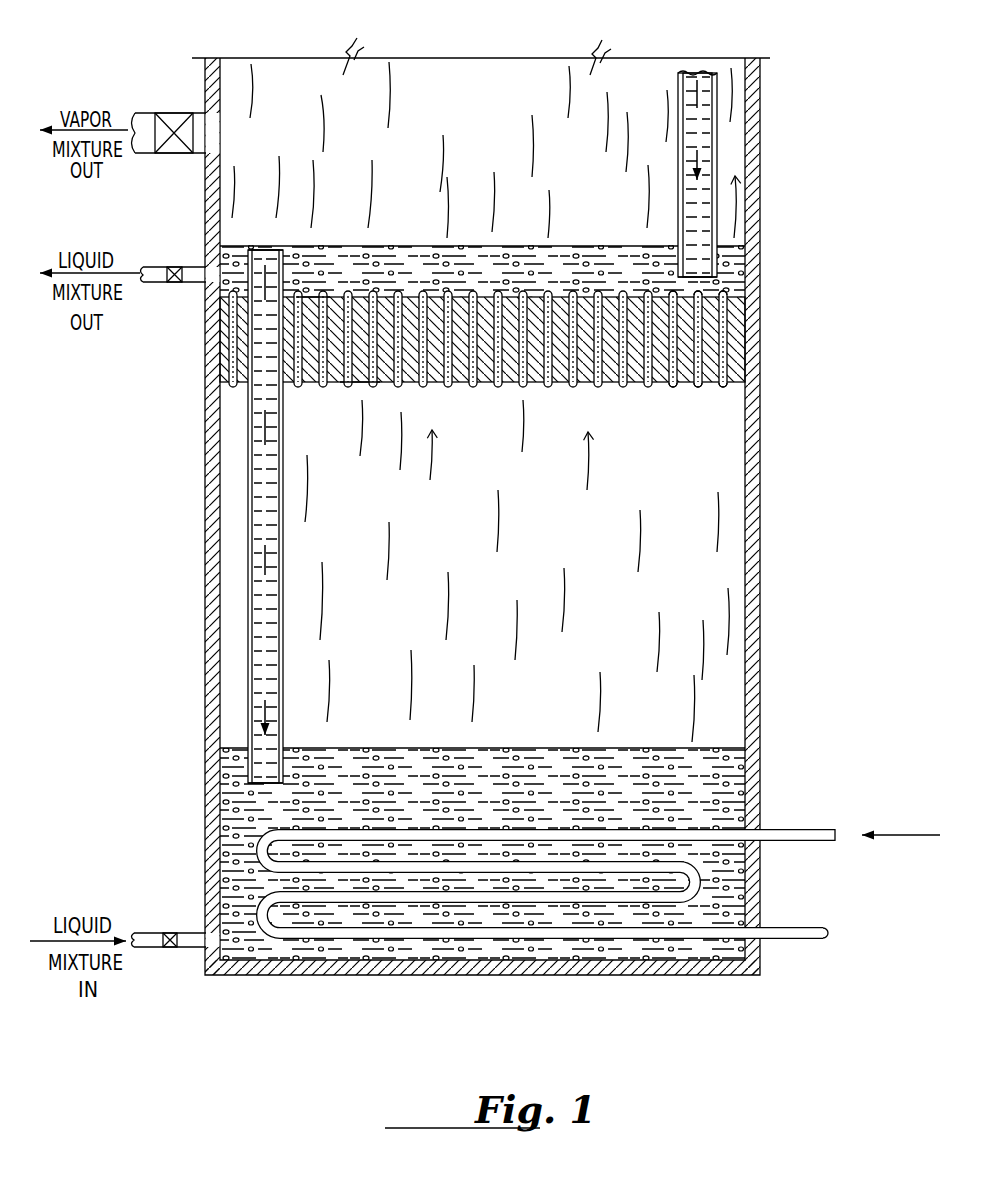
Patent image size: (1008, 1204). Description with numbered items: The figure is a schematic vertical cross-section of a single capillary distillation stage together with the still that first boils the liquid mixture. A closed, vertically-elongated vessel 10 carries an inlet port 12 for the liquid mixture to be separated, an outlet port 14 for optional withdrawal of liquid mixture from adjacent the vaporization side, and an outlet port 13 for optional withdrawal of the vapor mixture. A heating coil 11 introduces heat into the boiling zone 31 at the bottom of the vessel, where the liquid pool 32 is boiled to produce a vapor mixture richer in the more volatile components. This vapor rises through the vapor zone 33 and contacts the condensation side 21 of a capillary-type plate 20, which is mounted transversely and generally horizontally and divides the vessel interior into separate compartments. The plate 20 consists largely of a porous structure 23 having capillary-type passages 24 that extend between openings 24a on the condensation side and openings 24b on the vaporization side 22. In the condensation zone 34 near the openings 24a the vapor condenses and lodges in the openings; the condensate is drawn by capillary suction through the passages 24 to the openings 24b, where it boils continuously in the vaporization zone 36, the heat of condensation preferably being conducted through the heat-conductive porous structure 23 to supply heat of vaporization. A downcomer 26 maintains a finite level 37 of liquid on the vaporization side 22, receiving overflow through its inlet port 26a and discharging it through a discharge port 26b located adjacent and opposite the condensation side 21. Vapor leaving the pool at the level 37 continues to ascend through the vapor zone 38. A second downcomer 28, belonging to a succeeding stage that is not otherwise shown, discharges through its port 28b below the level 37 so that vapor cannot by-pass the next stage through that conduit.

The vessel 10 is at (766, 556).
The heating coil 11 is at (785, 835).
The inlet port 12 is at (195, 950).
The outlet port 13 is at (207, 100).
The outlet port 14 is at (195, 284).
The capillary-type plate 20 is at (542, 313).
The condensation side 21 is at (357, 386).
The vaporization side 22 is at (305, 293).
The porous structure 23 is at (733, 362).
The capillary-type passages 24 is at (725, 348).
The openings 24a is at (725, 392).
The openings 24b is at (700, 291).
The downcomer 26 is at (205, 514).
The inlet port 26a is at (257, 262).
The discharge port 26b is at (270, 786).
The downcomer 28 is at (756, 180).
The discharge port 28b is at (712, 290).
The boiling zone 31 is at (570, 892).
The liquid pool 32 is at (700, 745).
The vapor zone 33 is at (610, 620).
The condensation zone 34 is at (510, 384).
The vaporization zone 36 is at (484, 293).
The level 37 is at (365, 245).
The vapor zone 38 is at (432, 122).